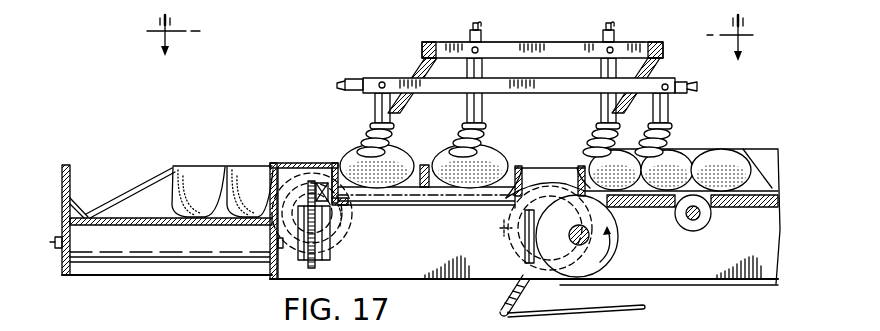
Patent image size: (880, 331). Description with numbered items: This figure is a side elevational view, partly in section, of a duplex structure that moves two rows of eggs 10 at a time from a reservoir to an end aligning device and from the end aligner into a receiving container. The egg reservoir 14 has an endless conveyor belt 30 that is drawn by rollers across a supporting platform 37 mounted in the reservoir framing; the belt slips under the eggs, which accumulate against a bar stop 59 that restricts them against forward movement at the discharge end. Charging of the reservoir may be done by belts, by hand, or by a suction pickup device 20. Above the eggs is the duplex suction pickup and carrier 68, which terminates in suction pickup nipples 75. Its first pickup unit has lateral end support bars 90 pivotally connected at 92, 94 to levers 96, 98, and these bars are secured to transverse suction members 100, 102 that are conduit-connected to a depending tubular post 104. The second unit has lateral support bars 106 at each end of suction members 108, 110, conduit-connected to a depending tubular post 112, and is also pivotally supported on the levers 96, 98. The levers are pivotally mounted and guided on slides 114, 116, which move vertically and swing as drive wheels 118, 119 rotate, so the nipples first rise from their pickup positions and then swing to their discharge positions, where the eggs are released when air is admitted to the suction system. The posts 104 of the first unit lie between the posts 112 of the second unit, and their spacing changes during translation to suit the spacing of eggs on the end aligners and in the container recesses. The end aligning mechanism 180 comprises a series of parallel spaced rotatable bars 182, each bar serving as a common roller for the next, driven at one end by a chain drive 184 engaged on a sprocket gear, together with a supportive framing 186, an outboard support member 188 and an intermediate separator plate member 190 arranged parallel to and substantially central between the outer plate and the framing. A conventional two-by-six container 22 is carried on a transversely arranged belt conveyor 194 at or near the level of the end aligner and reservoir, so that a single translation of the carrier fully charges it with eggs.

The eggs 10 is at (724, 150).
The egg reservoir 14 is at (743, 203).
The suction pickup device 20 is at (456, 55).
The container 22 is at (172, 170).
The conveyor belt 30 is at (650, 197).
The supporting platform 37 is at (763, 200).
The bar stop 59 is at (571, 167).
The duplex suction pickup and carrier 68 is at (579, 40).
The suction pickup nipples 75 is at (394, 138).
The lateral end support bars 90 is at (541, 43).
The pivotal connection 92 is at (432, 44).
The pivotal connection 94 is at (656, 42).
The lever 96 is at (413, 56).
The lever 98 is at (658, 68).
The transverse suction member 100 is at (481, 40).
The transverse suction member 102 is at (614, 40).
The tubular post 104 is at (467, 105).
The lateral support bars 106 is at (526, 88).
The suction member 108 is at (368, 78).
The suction member 110 is at (672, 78).
The tubular post 112 is at (374, 100).
The slide 114 is at (328, 253).
The slide 116 is at (526, 258).
The drive wheel 118 is at (342, 228).
The drive wheel 119 is at (504, 228).
The end aligning mechanism 180 is at (318, 164).
The rotatable bars 182 is at (433, 201).
The chain drive 184 is at (303, 229).
The supportive framing 186 is at (292, 164).
The outboard support member 188 is at (525, 166).
The separator plate member 190 is at (419, 140).
The belt conveyor 194 is at (198, 226).